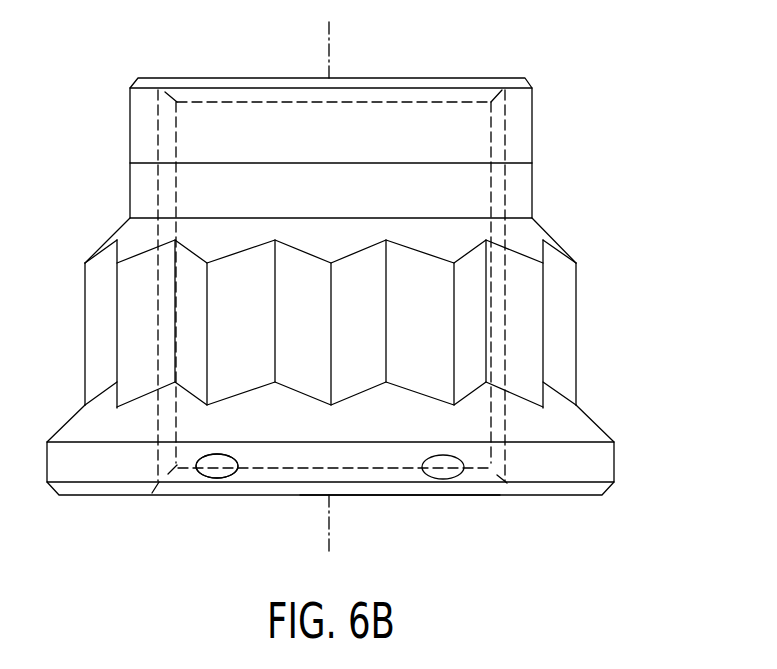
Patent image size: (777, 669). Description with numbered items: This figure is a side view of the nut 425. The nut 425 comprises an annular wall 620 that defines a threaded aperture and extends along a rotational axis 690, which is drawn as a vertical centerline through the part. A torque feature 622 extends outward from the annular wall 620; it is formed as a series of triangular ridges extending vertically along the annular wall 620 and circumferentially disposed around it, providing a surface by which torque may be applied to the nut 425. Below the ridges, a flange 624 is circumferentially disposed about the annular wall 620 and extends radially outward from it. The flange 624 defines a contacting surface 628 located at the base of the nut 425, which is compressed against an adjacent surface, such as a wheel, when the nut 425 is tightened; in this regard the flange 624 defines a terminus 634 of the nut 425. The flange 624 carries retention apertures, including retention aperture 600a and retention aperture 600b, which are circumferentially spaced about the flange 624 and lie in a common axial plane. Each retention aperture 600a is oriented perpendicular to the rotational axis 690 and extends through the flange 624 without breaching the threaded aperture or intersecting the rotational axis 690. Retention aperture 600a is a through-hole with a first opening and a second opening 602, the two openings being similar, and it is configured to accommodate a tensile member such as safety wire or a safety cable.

The nut 425 is at (583, 57).
The rotational axis 690 is at (333, 46).
The annular wall 620 is at (520, 137).
The torque feature 622 is at (564, 323).
The flange 624 is at (614, 442).
The contacting surface 628 is at (578, 497).
The retention aperture 600a is at (200, 476).
The retention aperture 600b is at (447, 480).
The second opening 602 is at (218, 473).
The terminus 634 is at (398, 496).